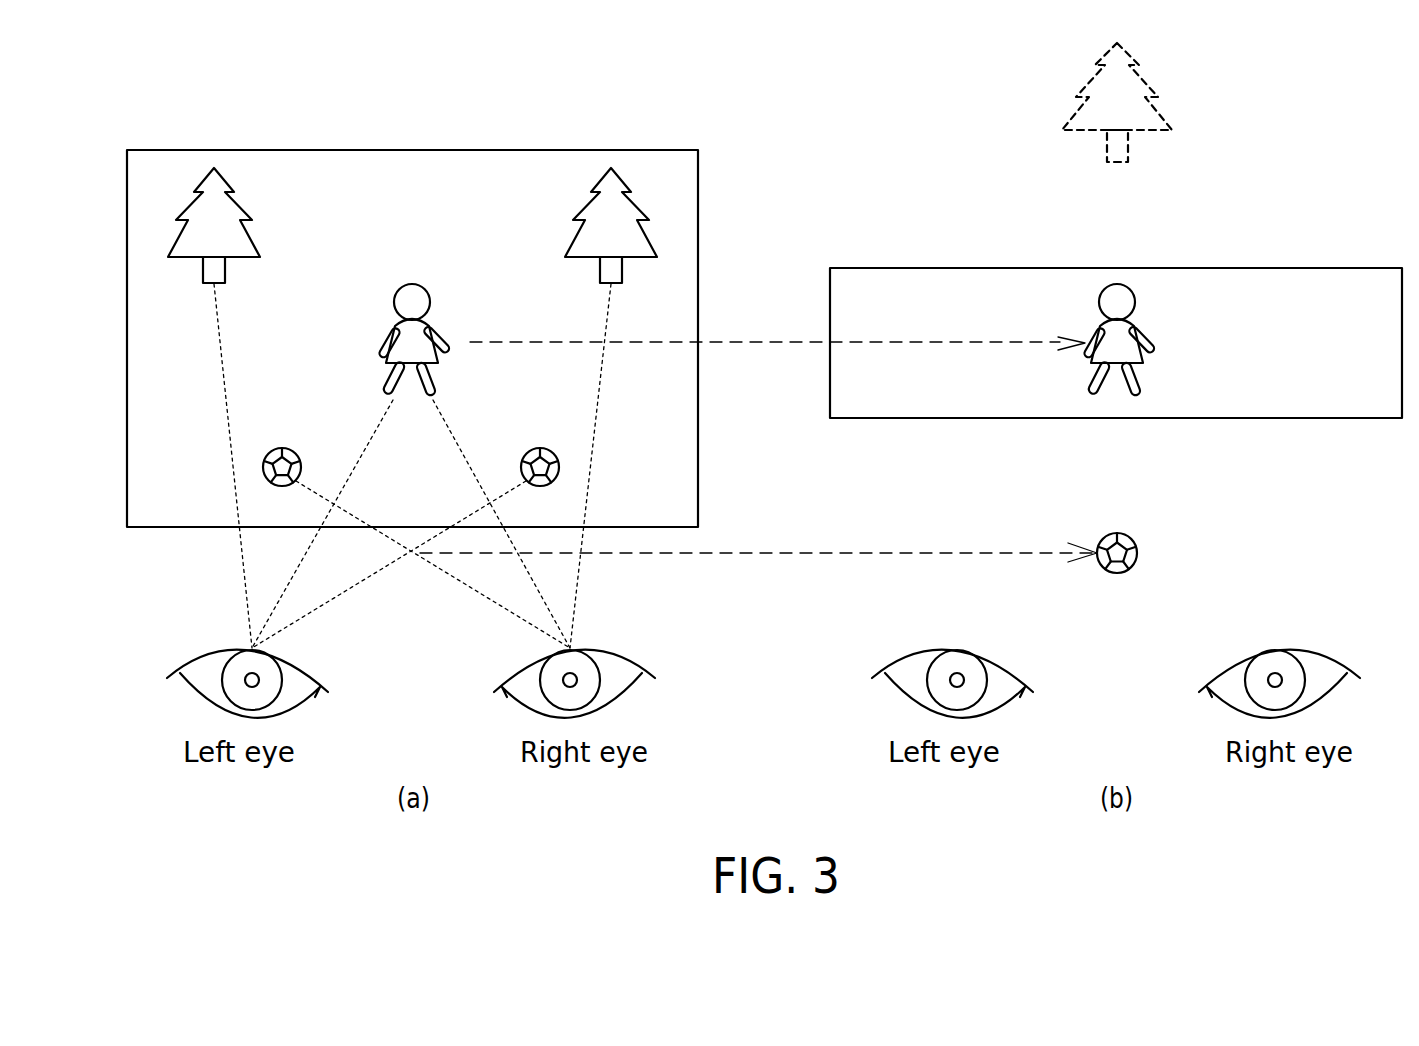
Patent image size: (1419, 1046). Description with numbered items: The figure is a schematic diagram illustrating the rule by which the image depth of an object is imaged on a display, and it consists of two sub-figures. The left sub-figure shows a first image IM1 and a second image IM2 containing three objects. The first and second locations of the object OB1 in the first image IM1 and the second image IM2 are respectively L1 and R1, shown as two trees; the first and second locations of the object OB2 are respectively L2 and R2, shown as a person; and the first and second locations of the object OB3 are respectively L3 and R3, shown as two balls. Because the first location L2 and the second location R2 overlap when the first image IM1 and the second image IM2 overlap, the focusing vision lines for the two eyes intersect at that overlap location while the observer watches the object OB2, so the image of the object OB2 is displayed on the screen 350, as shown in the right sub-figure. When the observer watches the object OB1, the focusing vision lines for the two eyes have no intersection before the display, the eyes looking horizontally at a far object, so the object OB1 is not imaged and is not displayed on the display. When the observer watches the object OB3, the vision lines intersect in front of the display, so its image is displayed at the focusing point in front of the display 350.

The first image IM1 is at (532, 122).
The second image IM2 is at (412, 338).
The first location of object OB1 L1 is at (206, 239).
The second location of object OB1 R1 is at (620, 239).
The first location of object OB2 L2 is at (414, 323).
The second location of object OB2 R2 is at (414, 340).
The first location of object OB3 L3 is at (540, 450).
The second location of object OB3 R3 is at (282, 450).
The object OB1 is at (1145, 80).
The object OB2 is at (1152, 335).
The object OB3 is at (1138, 542).
The screen 350 is at (1302, 268).